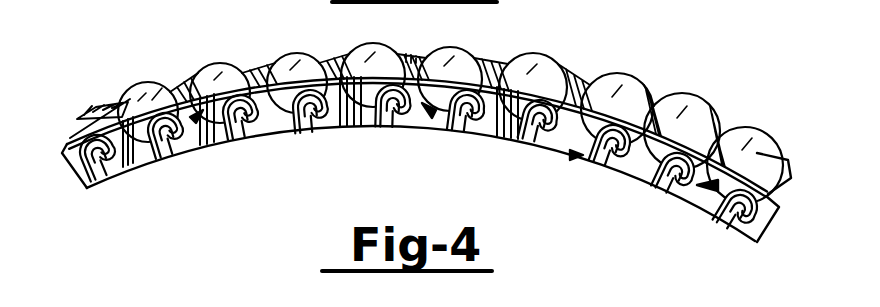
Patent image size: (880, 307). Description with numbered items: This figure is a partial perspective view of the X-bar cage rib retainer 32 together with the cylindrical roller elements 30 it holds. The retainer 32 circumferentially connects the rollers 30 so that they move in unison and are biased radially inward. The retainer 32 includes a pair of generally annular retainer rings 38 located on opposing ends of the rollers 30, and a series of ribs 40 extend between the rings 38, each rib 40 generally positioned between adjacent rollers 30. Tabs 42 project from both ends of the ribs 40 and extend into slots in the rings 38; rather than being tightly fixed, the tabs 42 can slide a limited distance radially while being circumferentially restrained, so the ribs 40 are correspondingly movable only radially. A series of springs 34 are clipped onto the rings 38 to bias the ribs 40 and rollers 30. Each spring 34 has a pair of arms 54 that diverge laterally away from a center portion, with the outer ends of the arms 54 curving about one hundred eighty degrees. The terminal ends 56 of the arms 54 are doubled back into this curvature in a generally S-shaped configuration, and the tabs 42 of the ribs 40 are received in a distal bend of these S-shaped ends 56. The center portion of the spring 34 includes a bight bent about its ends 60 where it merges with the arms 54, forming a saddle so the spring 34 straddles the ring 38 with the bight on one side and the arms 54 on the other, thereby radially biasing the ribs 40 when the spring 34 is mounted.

The roller element 30 is at (147, 94).
The retainer 32 is at (120, 70).
The spring 34 is at (222, 95).
The retainer ring 38 is at (200, 147).
The rib 40 is at (183, 90).
The tab 42 is at (102, 165).
The arm 54 is at (112, 110).
The terminal end 56 is at (82, 185).
The end of bight 60 is at (125, 172).